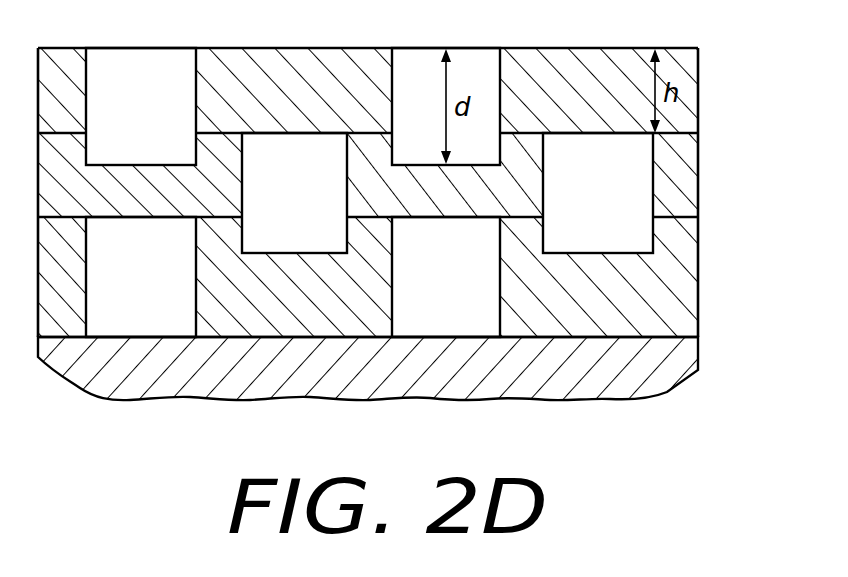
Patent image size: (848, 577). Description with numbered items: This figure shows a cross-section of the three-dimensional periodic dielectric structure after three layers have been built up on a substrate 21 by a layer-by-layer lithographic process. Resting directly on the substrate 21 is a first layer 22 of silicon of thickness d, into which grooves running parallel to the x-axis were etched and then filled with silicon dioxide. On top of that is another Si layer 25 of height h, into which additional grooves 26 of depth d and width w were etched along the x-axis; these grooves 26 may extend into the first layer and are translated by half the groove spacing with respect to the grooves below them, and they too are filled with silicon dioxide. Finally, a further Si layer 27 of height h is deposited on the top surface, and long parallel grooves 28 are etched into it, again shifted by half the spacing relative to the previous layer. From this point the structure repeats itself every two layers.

The substrate 21 is at (512, 380).
The layer of silicon 22 is at (672, 278).
The layer of Si 25 is at (690, 205).
The grooves 26 is at (620, 185).
The Si layer 27 is at (692, 100).
The long parallel grooves 28 is at (500, 72).